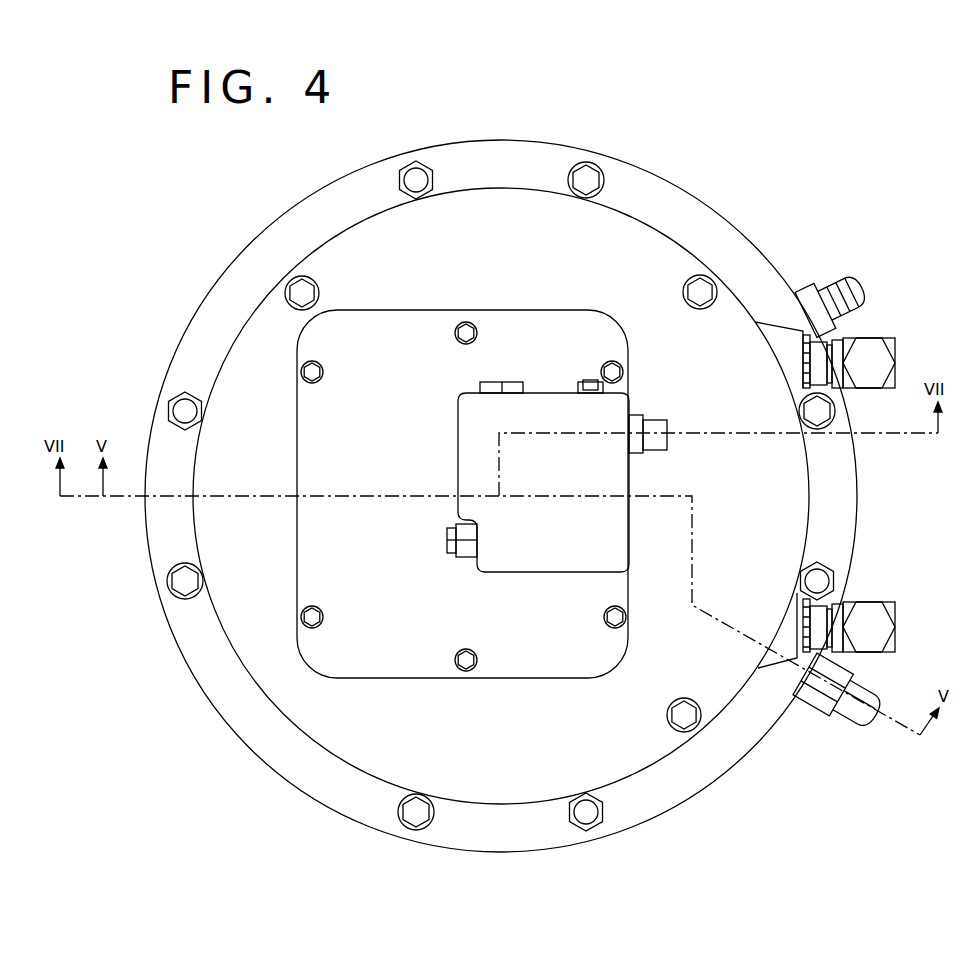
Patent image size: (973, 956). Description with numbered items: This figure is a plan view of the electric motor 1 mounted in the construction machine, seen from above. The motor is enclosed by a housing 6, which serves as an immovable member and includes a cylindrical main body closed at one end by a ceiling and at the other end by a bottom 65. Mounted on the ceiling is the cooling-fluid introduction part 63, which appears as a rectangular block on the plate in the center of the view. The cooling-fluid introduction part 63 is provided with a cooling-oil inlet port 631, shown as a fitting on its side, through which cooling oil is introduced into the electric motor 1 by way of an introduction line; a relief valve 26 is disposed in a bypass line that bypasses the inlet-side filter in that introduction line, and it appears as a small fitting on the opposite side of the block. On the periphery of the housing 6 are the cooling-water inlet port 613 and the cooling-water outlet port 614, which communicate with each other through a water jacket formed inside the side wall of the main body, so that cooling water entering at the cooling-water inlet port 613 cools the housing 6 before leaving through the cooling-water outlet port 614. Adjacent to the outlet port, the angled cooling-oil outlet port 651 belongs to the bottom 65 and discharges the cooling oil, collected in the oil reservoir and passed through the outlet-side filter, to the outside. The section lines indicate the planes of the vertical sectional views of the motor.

The electric motor 1 is at (742, 141).
The housing 6 is at (540, 141).
The relief valve 26 is at (447, 541).
The cooling-fluid introduction part 63 is at (456, 448).
The bottom 65 is at (690, 797).
The cooling-water inlet port 613 is at (897, 360).
The cooling-water outlet port 614 is at (898, 628).
The cooling-oil inlet port 631 is at (670, 430).
The cooling-oil outlet port 651 is at (862, 725).